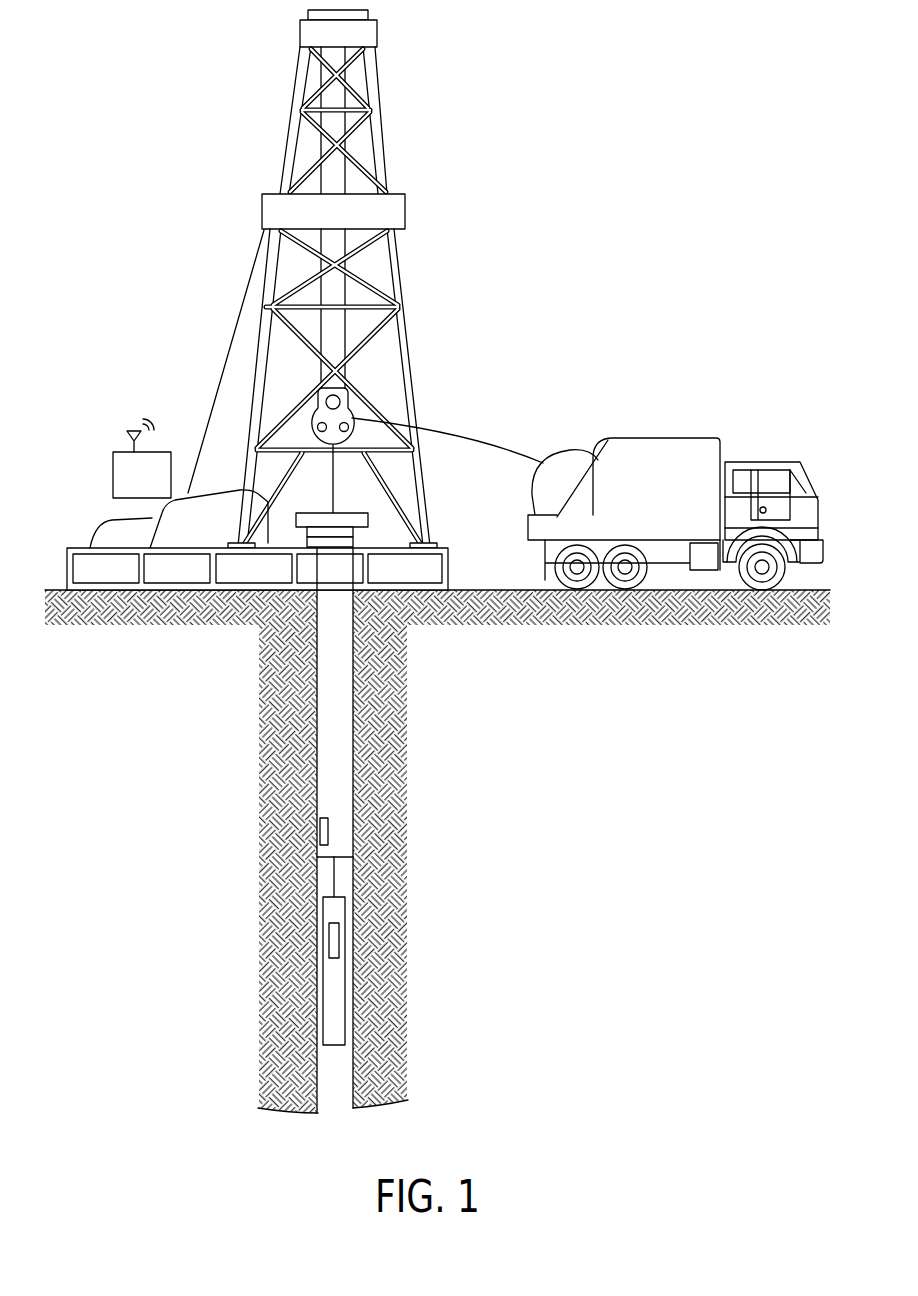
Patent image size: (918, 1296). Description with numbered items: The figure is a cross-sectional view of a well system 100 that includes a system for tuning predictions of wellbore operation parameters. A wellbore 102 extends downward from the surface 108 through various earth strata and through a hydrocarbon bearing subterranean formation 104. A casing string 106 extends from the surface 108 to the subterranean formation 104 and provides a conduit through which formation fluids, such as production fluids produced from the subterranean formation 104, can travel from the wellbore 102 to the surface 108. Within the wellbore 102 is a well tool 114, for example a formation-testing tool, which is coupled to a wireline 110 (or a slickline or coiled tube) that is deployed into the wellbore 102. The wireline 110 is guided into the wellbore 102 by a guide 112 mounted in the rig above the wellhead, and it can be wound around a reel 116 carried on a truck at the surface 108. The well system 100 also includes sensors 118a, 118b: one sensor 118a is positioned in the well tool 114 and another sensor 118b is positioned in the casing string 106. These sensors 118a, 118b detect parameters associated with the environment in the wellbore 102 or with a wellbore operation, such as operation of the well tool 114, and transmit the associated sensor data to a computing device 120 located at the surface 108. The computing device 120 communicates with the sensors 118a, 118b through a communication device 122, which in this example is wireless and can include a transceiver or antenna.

The well system 100 is at (534, 250).
The wellbore 102 is at (353, 802).
The subterranean formation 104 is at (405, 718).
The casing string 106 is at (323, 797).
The surface 108 is at (368, 514).
The wireline 110 is at (446, 434).
The guide 112 is at (346, 392).
The well tool 114 is at (350, 900).
The reel 116 is at (570, 452).
The sensor 118a is at (343, 932).
The sensor 118b is at (320, 830).
The computing device 120 is at (113, 481).
The communication device 122 is at (128, 437).